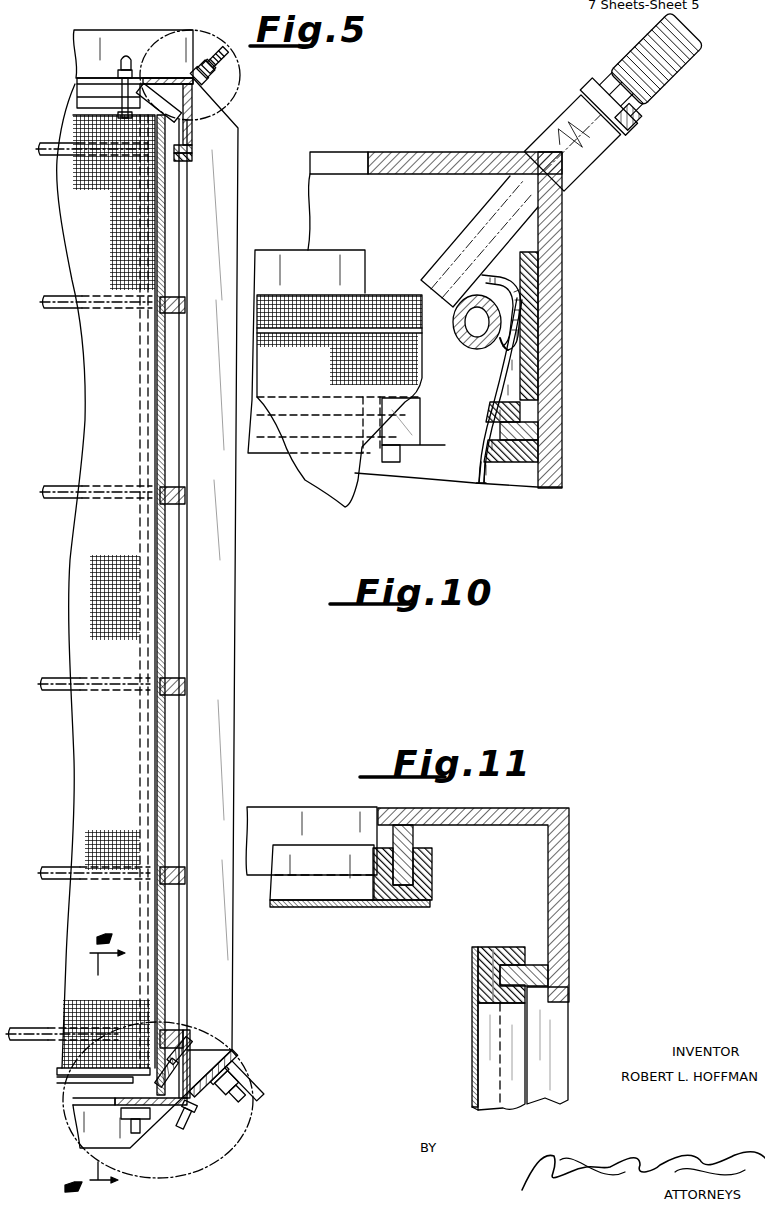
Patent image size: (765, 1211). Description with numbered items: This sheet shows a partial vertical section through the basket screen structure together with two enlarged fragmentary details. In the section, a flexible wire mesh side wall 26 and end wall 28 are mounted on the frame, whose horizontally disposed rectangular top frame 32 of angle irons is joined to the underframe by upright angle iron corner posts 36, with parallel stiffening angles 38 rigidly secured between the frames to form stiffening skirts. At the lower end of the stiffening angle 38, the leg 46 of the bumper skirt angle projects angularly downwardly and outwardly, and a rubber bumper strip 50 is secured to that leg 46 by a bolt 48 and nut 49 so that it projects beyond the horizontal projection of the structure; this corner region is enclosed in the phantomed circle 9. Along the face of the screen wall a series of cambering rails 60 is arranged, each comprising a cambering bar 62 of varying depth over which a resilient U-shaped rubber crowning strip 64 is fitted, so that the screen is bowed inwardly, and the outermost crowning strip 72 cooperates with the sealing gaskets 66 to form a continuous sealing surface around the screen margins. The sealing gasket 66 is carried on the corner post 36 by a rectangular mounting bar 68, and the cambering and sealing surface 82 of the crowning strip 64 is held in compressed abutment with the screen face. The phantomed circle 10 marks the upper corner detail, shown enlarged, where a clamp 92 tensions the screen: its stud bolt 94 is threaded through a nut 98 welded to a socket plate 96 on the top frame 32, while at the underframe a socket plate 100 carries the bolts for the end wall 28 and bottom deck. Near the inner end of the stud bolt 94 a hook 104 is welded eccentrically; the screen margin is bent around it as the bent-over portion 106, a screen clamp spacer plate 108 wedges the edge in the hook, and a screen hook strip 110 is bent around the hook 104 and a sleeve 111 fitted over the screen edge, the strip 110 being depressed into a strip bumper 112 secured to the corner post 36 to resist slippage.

In FIG. 5, the detail circle of FIG. 9 is at (246, 1149).
In FIG. 5, the phantomed circle 10 is at (219, 44).
In FIG. 5, the side wall 26 is at (108, 217).
In FIG. 10, the side wall 26 is at (481, 454).
In FIG. 11, the side wall 26 is at (476, 1005).
In FIG. 5, the end wall 28 is at (165, 620).
In FIG. 10, the end wall 28 is at (402, 363).
In FIG. 11, the end wall 28 is at (350, 908).
In FIG. 5, the top frame 32 is at (178, 77).
In FIG. 10, the top frame 32 is at (450, 160).
In FIG. 11, the corner post 36 is at (572, 864).
In FIG. 5, the stiffening angle 38 is at (83, 57).
In FIG. 11, the stiffening angle 38 is at (407, 955).
In FIG. 5, the leg 46 is at (220, 1093).
In FIG. 5, the bolt 48 is at (233, 1058).
In FIG. 5, the nut 49 is at (225, 1115).
In FIG. 5, the rubber bumper strip 50 is at (245, 1080).
In FIG. 5, the cambering rail 60 is at (36, 158).
In FIG. 10, the cambering rail 60 is at (285, 463).
In FIG. 5, the cambering bar 62 is at (192, 149).
In FIG. 10, the cambering bar 62 is at (546, 428).
In FIG. 5, the crowning strip 64 is at (188, 161).
In FIG. 10, the crowning strip 64 is at (527, 463).
In FIG. 10, the sealing gasket 66 is at (413, 435).
In FIG. 11, the sealing gasket 66 is at (436, 870).
In FIG. 10, the mounting bar 68 is at (393, 464).
In FIG. 11, the mounting bar 68 is at (412, 840).
In FIG. 10, the outermost crowning strip 72 is at (482, 485).
In FIG. 10, the sealing surface 82 is at (488, 424).
In FIG. 5, the clamp 92 is at (133, 60).
In FIG. 10, the clamp 92 is at (684, 78).
In FIG. 5, the stud bolt 94 is at (168, 98).
In FIG. 10, the stud bolt 94 is at (441, 284).
In FIG. 5, the socket plate 96 is at (213, 88).
In FIG. 10, the socket plate 96 is at (600, 162).
In FIG. 5, the nut 98 is at (217, 75).
In FIG. 10, the nut 98 is at (636, 124).
In FIG. 5, the socket plate 100 is at (179, 1119).
In FIG. 10, the hook 104 is at (460, 344).
In FIG. 10, the bent-over portion 106 is at (528, 310).
In FIG. 10, the screen clamp spacer plate 108 is at (501, 286).
In FIG. 10, the screen hook strip 110 is at (510, 353).
In FIG. 10, the sleeve 111 is at (503, 342).
In FIG. 5, the strip bumper 112 is at (192, 120).
In FIG. 10, the strip bumper 112 is at (345, 255).